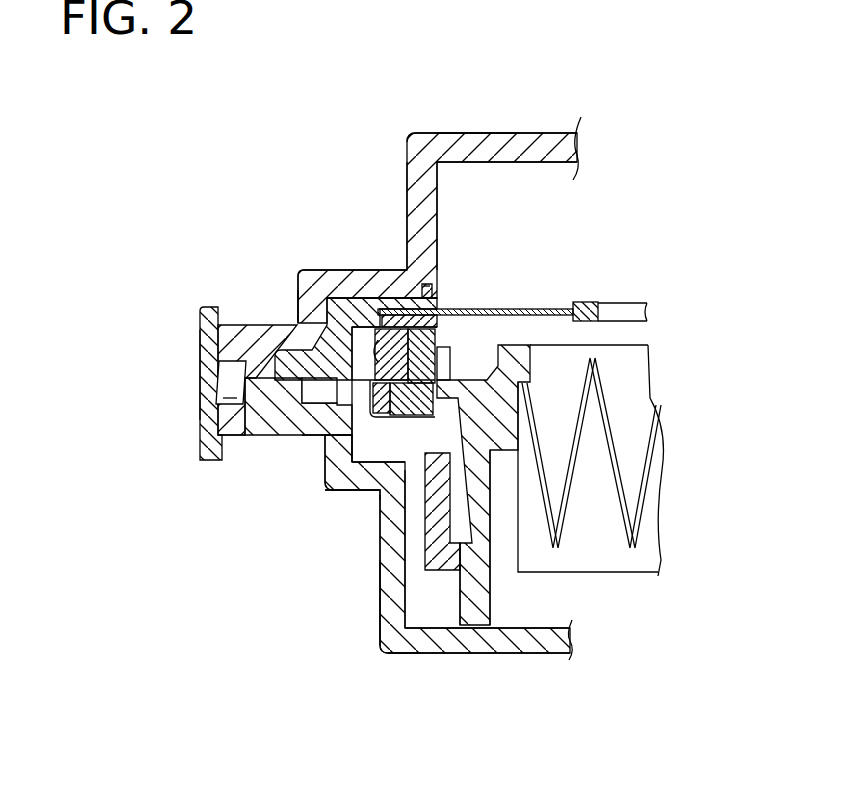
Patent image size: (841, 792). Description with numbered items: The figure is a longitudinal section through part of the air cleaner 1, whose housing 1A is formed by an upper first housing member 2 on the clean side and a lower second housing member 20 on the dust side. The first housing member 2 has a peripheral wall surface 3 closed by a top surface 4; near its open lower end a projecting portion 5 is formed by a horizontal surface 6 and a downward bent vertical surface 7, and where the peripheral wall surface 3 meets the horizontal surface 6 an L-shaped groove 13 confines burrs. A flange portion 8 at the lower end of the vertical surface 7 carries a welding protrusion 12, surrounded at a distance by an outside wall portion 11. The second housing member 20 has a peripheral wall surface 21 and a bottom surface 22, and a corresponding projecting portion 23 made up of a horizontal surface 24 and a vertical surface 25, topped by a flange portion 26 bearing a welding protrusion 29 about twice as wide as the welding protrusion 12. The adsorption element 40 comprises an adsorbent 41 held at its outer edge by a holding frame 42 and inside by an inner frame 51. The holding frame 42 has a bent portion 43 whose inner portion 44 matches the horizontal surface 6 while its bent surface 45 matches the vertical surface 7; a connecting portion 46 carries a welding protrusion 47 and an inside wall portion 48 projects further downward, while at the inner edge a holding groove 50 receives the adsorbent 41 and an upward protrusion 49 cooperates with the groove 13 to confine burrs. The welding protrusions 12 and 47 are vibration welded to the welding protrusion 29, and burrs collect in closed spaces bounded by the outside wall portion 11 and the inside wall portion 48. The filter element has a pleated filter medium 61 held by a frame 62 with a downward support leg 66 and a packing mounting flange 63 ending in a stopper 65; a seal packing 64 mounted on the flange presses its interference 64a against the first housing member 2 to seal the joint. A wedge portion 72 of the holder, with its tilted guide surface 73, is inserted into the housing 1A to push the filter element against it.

The air cleaner 1 is at (478, 124).
The housing 1A is at (424, 130).
The first housing member 2 is at (404, 176).
The peripheral wall surface 3 is at (405, 222).
The top surface 4 is at (540, 133).
The projecting portion 5 is at (296, 277).
The horizontal surface 6 is at (318, 270).
The vertical surface 7 is at (294, 294).
The flange portion 8 is at (258, 322).
The outside wall portion 11 is at (200, 378).
The welding protrusion 12 is at (218, 360).
The groove 13 is at (432, 275).
The second housing member 20 is at (422, 658).
The peripheral wall surface 21 is at (378, 560).
The bottom surface 22 is at (525, 657).
The projecting portion 23 is at (322, 492).
The horizontal surface 24 is at (355, 495).
The vertical surface 25 is at (323, 460).
The flange portion 26 is at (245, 440).
The welding protrusion 29 is at (218, 395).
The adsorption element 40 is at (517, 258).
The adsorbent 41 is at (527, 300).
The holding frame 42 is at (385, 290).
The bent portion 43 is at (331, 270).
The portion on the inner side of the bent portion 44 is at (381, 296).
The bent surface 45 is at (300, 307).
The connecting portion 46 is at (297, 435).
The welding protrusion 47 is at (262, 437).
The inside wall portion 48 is at (357, 407).
The protrusion 49 is at (443, 287).
The holding groove 50 is at (440, 297).
The inner frame 51 is at (590, 300).
The filter medium 61 is at (603, 403).
The frame 62 is at (507, 348).
The packing mounting flange 63 is at (477, 380).
The seal packing 64 is at (412, 420).
The interference 64a is at (440, 320).
The stopper 65 is at (384, 350).
The support leg 66 is at (493, 487).
The wedge portion 72 is at (380, 610).
The guide surface 73 is at (457, 535).